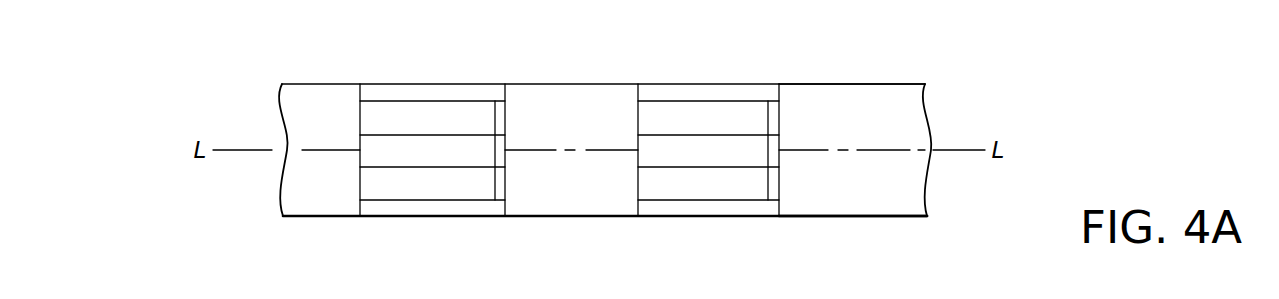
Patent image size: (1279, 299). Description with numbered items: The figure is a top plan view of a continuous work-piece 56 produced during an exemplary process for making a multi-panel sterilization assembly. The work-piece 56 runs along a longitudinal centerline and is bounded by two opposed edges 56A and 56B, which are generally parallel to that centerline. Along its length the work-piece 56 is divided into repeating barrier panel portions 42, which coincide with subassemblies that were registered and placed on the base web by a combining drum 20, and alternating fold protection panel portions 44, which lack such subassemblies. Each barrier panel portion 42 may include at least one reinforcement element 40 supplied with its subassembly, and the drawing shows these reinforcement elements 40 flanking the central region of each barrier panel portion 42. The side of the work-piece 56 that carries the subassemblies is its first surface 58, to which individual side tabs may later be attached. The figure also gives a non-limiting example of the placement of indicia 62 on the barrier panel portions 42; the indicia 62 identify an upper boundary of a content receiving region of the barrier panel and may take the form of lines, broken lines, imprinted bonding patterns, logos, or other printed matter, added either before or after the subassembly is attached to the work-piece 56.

The combining drum 20 is at (447, 160).
The reinforcement element 40 is at (431, 127).
The barrier panel portion 42 is at (428, 218).
The fold protection panel portion 44 is at (579, 218).
The continuous work-piece 56 is at (943, 206).
The first opposed edge of the continuous work-piece 56A is at (832, 84).
The second opposed edge of the continuous work-piece 56B is at (838, 218).
The first surface 58 is at (870, 130).
The indicia 62 is at (493, 119).